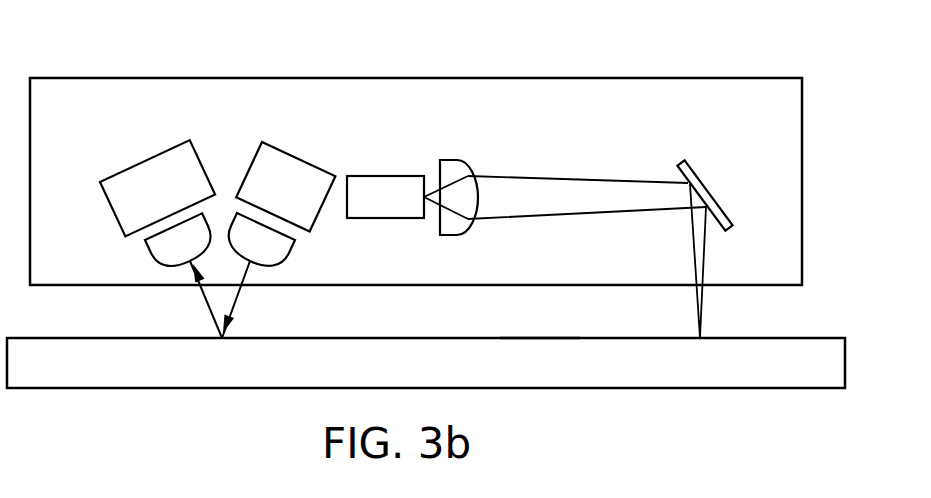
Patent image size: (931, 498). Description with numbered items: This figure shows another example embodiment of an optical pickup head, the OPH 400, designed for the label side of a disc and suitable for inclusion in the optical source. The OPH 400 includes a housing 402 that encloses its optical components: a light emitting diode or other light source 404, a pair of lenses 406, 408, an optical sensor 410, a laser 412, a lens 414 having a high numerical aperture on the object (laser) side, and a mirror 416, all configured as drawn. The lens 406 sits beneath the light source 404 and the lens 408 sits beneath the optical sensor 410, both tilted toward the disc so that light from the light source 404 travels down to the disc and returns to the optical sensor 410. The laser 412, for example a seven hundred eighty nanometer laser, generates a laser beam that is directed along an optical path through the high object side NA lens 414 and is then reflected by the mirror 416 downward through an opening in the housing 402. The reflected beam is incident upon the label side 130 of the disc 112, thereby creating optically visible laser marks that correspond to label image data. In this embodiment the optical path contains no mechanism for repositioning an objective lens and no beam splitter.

The optical pickup head (OPH) 400 is at (134, 43).
The housing 402 is at (548, 78).
The light emitting diode (LED) or other light source 404 is at (297, 157).
The lens 406 is at (291, 249).
The lens 408 is at (148, 250).
The optical sensor 410 is at (147, 162).
The laser 412 is at (390, 218).
The high object side NA lens 414 is at (448, 235).
The mirror 416 is at (682, 157).
The label side 130 is at (540, 340).
The disc 112 is at (490, 368).